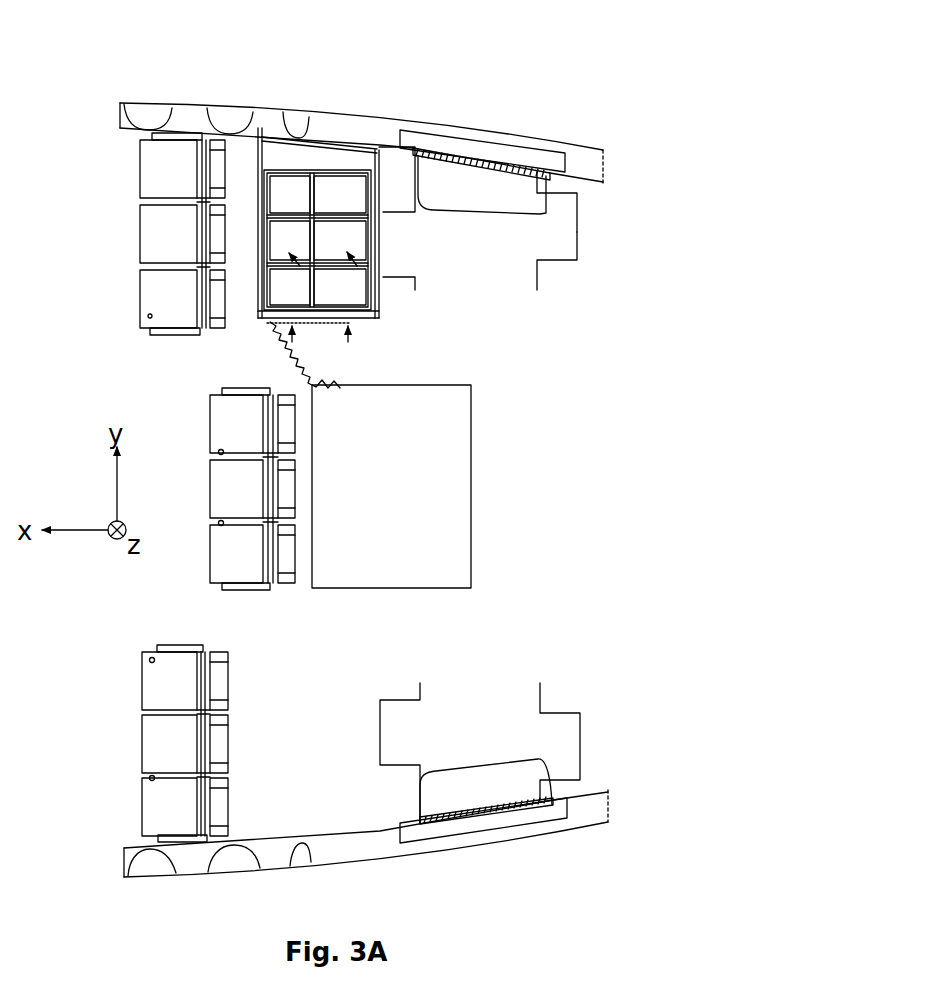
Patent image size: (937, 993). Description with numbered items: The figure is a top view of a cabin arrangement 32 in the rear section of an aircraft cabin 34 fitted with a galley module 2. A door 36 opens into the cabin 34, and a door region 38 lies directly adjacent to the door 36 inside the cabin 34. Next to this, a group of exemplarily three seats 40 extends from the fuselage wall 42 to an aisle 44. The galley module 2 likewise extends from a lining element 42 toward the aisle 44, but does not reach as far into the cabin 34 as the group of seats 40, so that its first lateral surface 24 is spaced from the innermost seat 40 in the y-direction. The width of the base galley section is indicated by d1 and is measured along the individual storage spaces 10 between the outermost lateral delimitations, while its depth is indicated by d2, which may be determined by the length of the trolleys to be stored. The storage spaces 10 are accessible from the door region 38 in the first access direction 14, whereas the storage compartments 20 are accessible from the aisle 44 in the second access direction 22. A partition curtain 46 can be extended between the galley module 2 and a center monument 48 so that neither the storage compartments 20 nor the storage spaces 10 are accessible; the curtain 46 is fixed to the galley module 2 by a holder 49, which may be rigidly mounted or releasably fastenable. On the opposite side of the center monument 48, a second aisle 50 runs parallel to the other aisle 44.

The galley module 2 is at (317, 157).
The storage spaces 10 is at (392, 196).
The first access direction 14 is at (387, 163).
The storage compartments 20 is at (318, 240).
The second access direction 22 is at (257, 321).
The first lateral surface 24 is at (337, 337).
The cabin arrangement 32 is at (567, 84).
The cabin 34 is at (587, 187).
The door 36 is at (437, 150).
The door region 38 is at (540, 275).
The seats 40 is at (178, 155).
The fuselage wall 42 is at (122, 106).
The aisle 44 is at (176, 358).
The partition curtain 46 is at (296, 362).
The center monument 48 is at (447, 563).
The holder 49 is at (256, 290).
The second aisle 50 is at (186, 615).
The width of the base galley section d1 is at (400, 227).
The depth of the base galley section d2 is at (308, 339).